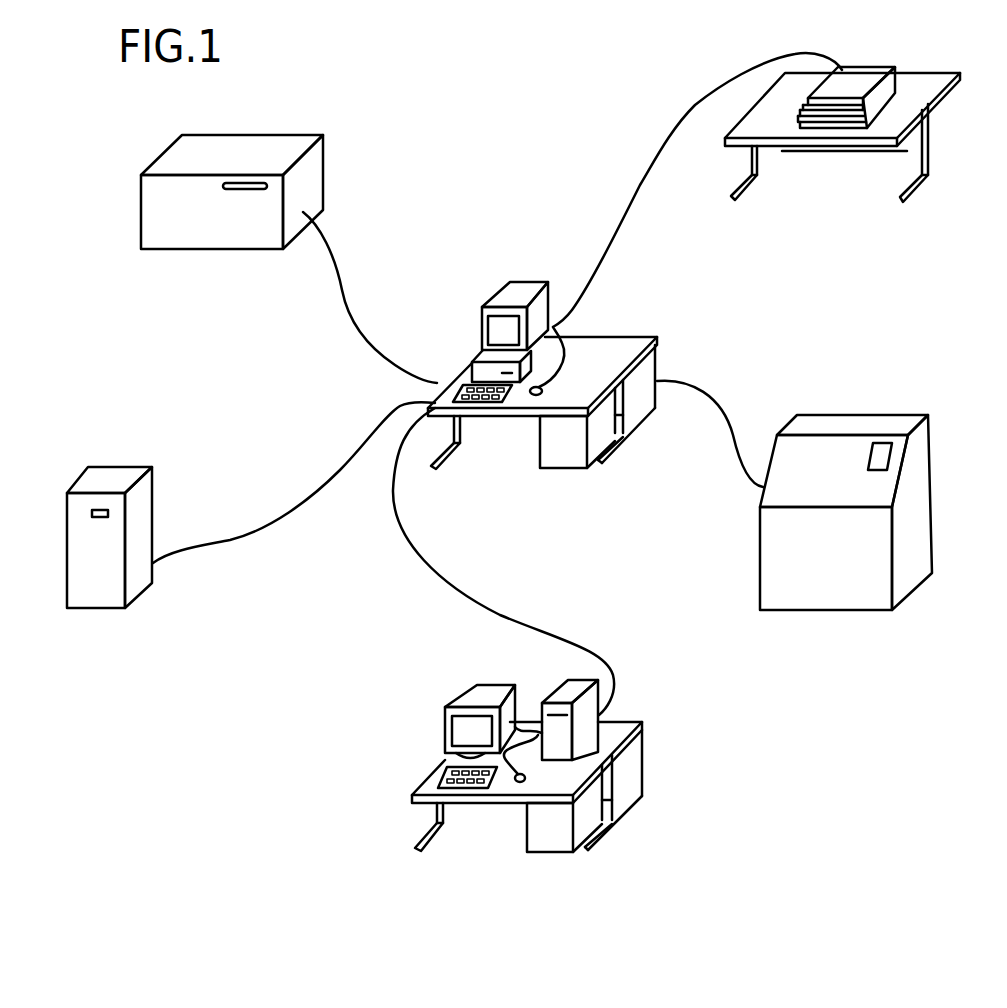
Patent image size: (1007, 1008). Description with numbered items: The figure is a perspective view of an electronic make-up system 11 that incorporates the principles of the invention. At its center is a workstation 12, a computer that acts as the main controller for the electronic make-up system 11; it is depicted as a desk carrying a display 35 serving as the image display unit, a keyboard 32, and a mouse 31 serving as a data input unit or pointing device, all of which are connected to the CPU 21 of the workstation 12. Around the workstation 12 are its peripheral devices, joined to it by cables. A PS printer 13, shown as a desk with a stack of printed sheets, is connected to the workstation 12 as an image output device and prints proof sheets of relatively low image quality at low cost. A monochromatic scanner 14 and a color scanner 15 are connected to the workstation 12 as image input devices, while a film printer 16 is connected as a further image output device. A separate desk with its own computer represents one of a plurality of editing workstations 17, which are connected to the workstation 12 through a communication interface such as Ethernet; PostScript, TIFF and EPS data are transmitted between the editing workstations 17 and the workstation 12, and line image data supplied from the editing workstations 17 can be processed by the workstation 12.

The electronic make-up system 11 is at (417, 72).
The workstation 12 is at (453, 494).
The PS printer 13 is at (816, 181).
The monochromatic scanner 14 is at (321, 157).
The color scanner 15 is at (153, 502).
The film printer 16 is at (759, 566).
The editing workstation 17 is at (436, 685).
The CPU 21 is at (553, 348).
The mouse 31 is at (535, 413).
The keyboard 32 is at (457, 352).
The display 35 is at (490, 301).